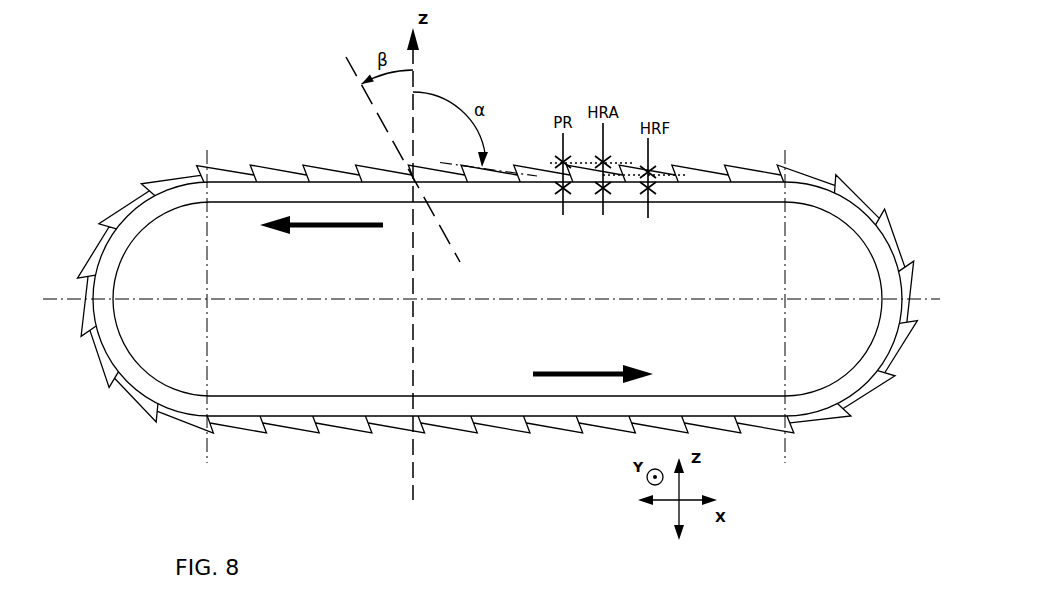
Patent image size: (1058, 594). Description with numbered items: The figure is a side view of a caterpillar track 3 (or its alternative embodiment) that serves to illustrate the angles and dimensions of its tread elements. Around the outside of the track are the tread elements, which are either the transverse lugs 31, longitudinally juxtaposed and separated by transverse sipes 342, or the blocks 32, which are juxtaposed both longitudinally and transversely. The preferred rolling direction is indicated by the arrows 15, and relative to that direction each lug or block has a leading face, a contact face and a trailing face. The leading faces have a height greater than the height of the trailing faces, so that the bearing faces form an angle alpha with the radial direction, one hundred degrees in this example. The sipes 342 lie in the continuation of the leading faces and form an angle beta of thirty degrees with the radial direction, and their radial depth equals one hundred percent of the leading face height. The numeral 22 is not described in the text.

The caterpillar track 3 is at (838, 92).
The arrows indicating preferred rolling direction 15 is at (307, 226).
The track / belt 22 is at (756, 182).
The transverse lugs 31 is at (230, 178).
The blocks 32 is at (270, 177).
The transverse sipes 342 is at (313, 178).